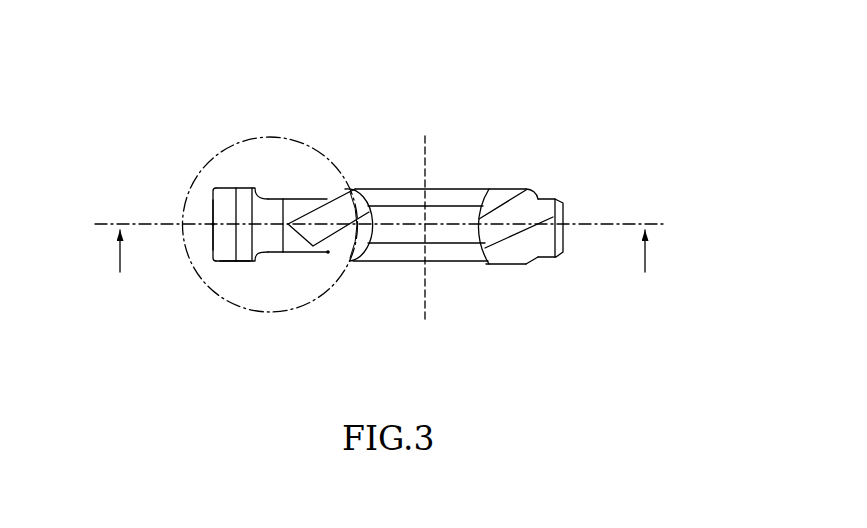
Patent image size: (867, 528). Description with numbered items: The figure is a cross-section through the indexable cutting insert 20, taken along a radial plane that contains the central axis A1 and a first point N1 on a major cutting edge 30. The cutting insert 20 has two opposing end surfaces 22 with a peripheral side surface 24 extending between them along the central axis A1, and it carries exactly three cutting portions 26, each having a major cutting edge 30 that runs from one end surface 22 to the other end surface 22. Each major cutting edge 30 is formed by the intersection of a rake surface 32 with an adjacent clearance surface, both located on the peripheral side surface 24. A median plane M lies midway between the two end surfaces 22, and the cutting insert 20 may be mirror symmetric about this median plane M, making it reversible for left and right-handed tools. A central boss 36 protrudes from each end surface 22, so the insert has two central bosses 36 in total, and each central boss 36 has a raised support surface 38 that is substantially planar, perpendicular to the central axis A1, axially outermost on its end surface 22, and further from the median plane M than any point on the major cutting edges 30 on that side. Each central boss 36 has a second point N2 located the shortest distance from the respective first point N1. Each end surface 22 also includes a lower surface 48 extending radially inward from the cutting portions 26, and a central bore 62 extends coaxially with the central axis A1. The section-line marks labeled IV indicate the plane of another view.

The cutting insert 20 is at (561, 188).
The end surface 22 is at (305, 196).
The peripheral side surface 24 is at (568, 212).
The cutting portion 26 is at (222, 193).
The major cutting edge 30 is at (218, 240).
The rake surface 32 is at (221, 238).
The central boss 36 is at (520, 187).
The support surface 38 is at (502, 188).
The lower surface 48 is at (292, 198).
The central bore 62 is at (462, 202).
The first point N1 is at (212, 224).
The second point N2 is at (328, 198).
The central axis A1 is at (423, 226).
The median plane M is at (374, 226).
The section view indicator IV is at (132, 298).